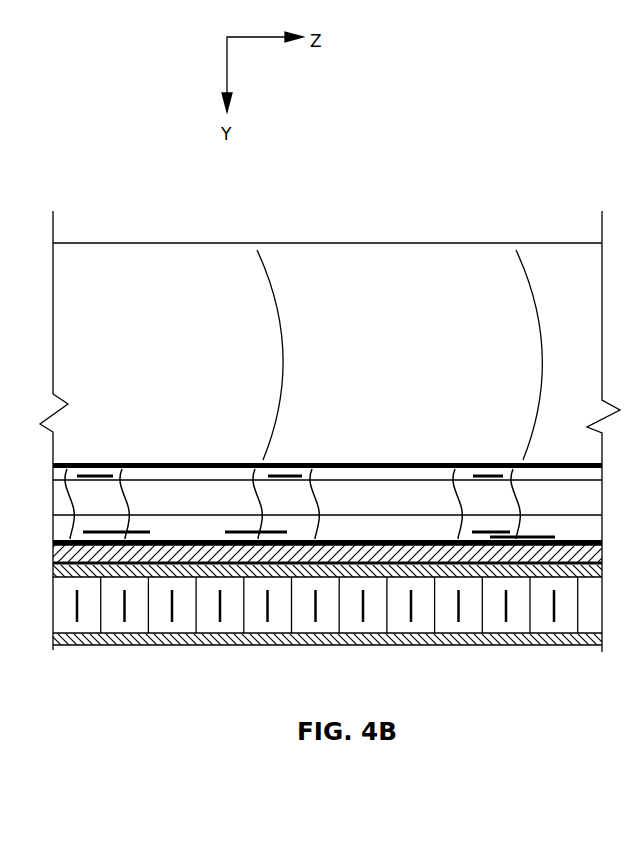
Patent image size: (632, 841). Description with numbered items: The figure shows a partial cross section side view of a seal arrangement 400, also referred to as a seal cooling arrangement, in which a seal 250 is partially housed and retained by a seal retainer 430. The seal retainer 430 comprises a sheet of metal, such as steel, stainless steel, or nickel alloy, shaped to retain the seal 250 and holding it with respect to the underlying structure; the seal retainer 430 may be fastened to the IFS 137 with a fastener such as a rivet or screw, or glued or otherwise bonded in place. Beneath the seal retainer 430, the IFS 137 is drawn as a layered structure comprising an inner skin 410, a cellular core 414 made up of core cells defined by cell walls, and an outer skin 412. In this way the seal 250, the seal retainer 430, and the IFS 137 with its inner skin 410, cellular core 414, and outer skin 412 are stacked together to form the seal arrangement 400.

The seal arrangement 400 is at (466, 200).
The seal 250 is at (377, 395).
The seal retainer 430 is at (407, 510).
The IFS 137 is at (158, 549).
The inner skin 410 is at (407, 573).
The cellular core 414 is at (352, 617).
The outer skin 412 is at (307, 637).